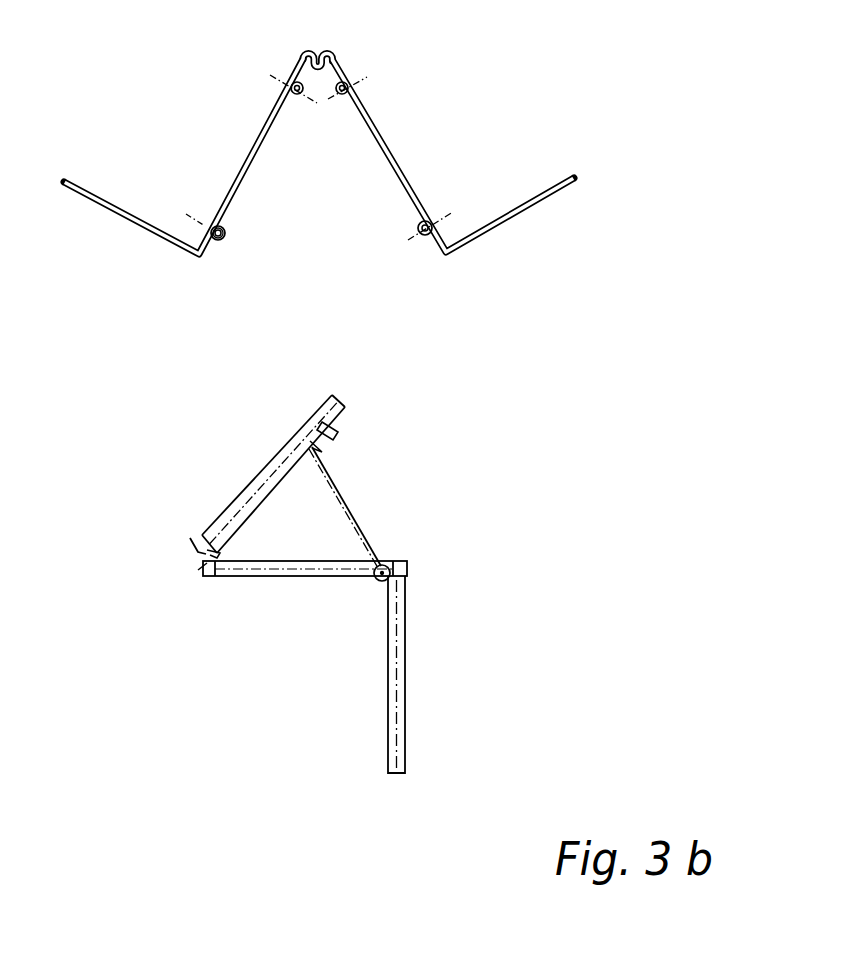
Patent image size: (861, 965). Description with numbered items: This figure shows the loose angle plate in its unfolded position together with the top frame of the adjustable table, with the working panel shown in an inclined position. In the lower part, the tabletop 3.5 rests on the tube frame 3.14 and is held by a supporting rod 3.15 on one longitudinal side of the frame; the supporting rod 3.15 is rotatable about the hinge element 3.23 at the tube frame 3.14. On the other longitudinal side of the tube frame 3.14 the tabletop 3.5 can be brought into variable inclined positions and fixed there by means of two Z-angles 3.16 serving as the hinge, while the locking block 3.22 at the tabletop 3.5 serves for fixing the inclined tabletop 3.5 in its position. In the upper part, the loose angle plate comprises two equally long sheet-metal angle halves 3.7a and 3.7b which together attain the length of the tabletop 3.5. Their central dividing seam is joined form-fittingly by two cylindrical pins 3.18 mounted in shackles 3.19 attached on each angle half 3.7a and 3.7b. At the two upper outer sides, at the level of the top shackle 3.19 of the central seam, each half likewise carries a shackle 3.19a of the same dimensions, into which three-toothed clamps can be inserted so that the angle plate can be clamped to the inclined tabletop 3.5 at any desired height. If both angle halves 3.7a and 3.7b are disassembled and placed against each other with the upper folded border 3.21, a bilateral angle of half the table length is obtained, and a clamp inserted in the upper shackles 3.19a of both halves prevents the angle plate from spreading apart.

The tabletop 3.5 is at (258, 483).
The sheet-metal angle half 3.7a is at (122, 217).
The sheet-metal angle half 3.7b is at (515, 213).
The tube frame 3.14 is at (298, 565).
The supporting rod 3.15 is at (345, 500).
The Z-angle 3.16 is at (197, 540).
The cylindrical pin 3.18 is at (225, 238).
The shackle 3.19 is at (207, 227).
The shackle 3.19a is at (290, 88).
The upper folded border 3.21 is at (332, 62).
The locking block 3.22 is at (325, 436).
The hinge element 3.23 is at (375, 587).